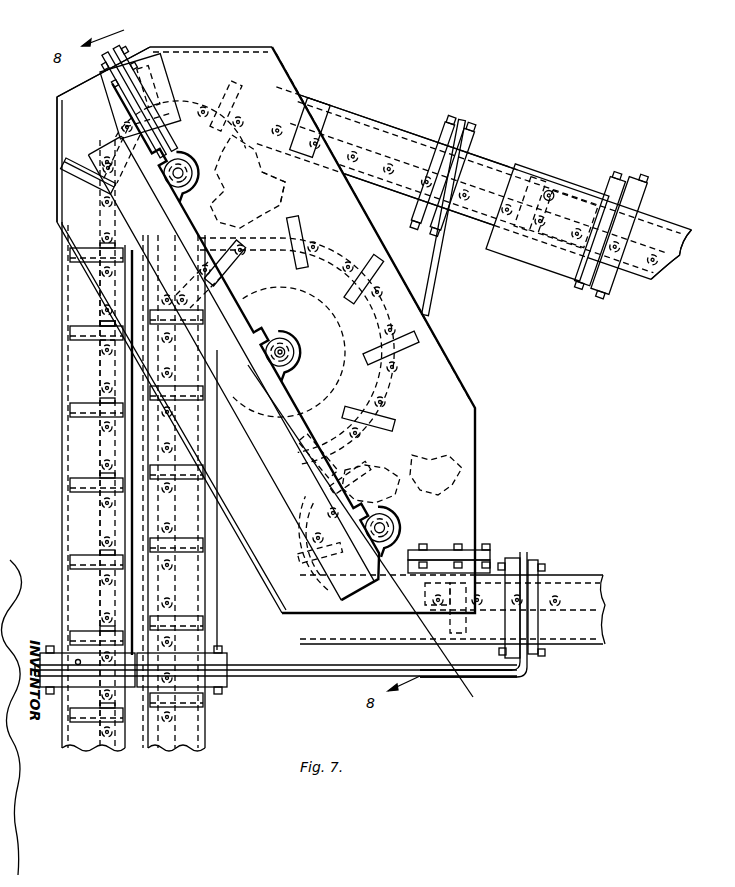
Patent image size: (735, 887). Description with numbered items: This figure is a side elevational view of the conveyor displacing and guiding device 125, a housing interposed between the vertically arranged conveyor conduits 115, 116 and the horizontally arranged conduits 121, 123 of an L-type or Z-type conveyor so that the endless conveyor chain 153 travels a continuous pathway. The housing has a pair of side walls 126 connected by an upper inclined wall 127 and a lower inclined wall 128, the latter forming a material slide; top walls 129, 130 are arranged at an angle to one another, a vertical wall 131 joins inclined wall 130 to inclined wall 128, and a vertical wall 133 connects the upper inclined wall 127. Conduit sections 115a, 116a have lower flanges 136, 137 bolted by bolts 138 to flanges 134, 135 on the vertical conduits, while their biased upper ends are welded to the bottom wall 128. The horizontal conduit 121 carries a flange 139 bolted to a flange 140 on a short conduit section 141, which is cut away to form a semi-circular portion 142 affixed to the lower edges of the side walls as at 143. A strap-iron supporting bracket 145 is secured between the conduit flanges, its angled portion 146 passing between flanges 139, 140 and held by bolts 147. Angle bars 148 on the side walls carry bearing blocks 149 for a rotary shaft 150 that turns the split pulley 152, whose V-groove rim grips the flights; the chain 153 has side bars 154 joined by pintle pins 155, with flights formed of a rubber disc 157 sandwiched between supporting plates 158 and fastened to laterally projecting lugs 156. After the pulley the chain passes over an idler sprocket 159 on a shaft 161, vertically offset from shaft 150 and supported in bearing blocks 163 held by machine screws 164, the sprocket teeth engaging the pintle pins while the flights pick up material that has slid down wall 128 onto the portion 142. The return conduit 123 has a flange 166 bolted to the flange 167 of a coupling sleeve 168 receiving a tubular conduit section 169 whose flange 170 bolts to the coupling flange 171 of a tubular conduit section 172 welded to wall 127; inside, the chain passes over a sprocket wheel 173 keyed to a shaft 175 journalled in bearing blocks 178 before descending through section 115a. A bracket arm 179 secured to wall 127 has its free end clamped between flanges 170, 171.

The vertically arranged conveyor conduit 115 is at (78, 748).
The conduit section 115a is at (60, 522).
The vertically arranged conveyor conduit 116 is at (208, 744).
The conduit section 116a is at (217, 631).
The horizontal conveyor conduit 121 is at (597, 576).
The return conduit 123 is at (658, 205).
The conveyor displacing and guiding device 125 is at (457, 386).
The side wall 126 is at (378, 516).
The upper inclined wall 127 is at (452, 352).
The lower inclined wall 128 is at (255, 578).
The top wall 129 is at (207, 47).
The top wall 130 is at (68, 86).
The vertical wall 131 is at (57, 162).
The vertical wall 133 is at (480, 478).
The flange 134 is at (46, 688).
The flange 135 is at (232, 676).
The flange 136 is at (78, 656).
The flange 137 is at (232, 665).
The bolt 138 is at (50, 654).
The flange 139 is at (538, 556).
The flange 140 is at (512, 552).
The short conduit section 141 is at (478, 680).
The semi-circular portion 142 is at (378, 645).
The weld 143 is at (315, 617).
The supporting bracket 145 is at (452, 683).
The angled portion 146 is at (528, 552).
The bolt 147 is at (549, 564).
The angle bar 148 is at (240, 290).
The bearing block 149 is at (295, 348).
The rotary shaft 150 is at (282, 342).
The split pulley 152 is at (285, 381).
The endless conveyor chain 153 is at (670, 258).
The side bar 154 is at (98, 442).
The pintle pin 155 is at (103, 466).
The laterally projecting lug 156 is at (550, 193).
The rubber disc 157 is at (80, 333).
The supporting plate 158 is at (78, 322).
The idler sprocket 159 is at (432, 485).
The rotary shaft 161 is at (395, 527).
The bearing block 163 is at (390, 516).
The machine screw 164 is at (371, 484).
The flange 166 is at (640, 182).
The flange 167 is at (618, 175).
The coupling sleeve 168 is at (557, 262).
The tubular conduit section 169 is at (492, 238).
The flange 170 is at (477, 122).
The coupling flange 171 is at (457, 122).
The tubular conduit section 172 is at (343, 106).
The sprocket wheel 173 is at (250, 192).
The shaft 175 is at (266, 196).
The bearing block 178 is at (200, 172).
The bracket arm 179 is at (428, 268).